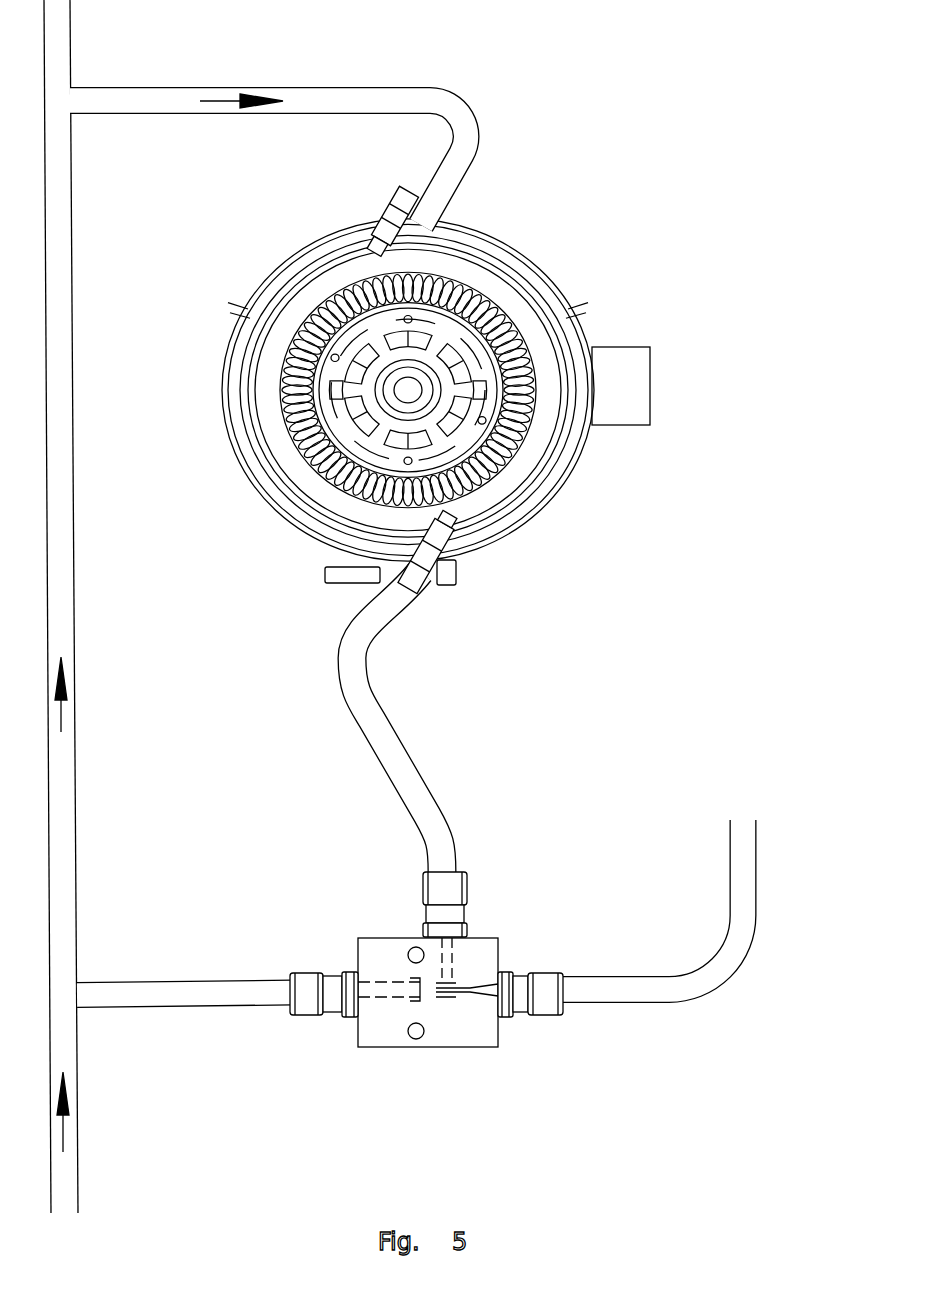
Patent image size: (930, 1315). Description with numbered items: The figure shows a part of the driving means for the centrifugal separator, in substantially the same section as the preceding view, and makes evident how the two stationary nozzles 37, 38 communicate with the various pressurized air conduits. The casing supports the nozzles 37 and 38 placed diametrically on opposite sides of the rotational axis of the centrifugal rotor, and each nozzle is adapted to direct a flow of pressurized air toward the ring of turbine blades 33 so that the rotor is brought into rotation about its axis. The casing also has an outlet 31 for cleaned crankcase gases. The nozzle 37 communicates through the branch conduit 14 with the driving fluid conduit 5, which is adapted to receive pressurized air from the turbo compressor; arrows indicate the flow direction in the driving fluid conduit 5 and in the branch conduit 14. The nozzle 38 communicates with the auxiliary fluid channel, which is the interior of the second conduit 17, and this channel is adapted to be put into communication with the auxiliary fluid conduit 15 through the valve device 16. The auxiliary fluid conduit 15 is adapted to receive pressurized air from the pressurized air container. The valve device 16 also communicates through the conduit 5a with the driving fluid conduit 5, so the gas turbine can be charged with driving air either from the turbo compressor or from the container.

The driving fluid conduit 5 is at (62, 558).
The conduit 5a is at (200, 1006).
The branch conduit 14 is at (326, 96).
The auxiliary fluid conduit 15 is at (742, 870).
The valve device 16 is at (462, 1030).
The second conduit 17 is at (380, 737).
The outlet 31 is at (648, 386).
The turbine blades 33 is at (482, 297).
The nozzle 37 is at (363, 268).
The nozzle 38 is at (453, 510).